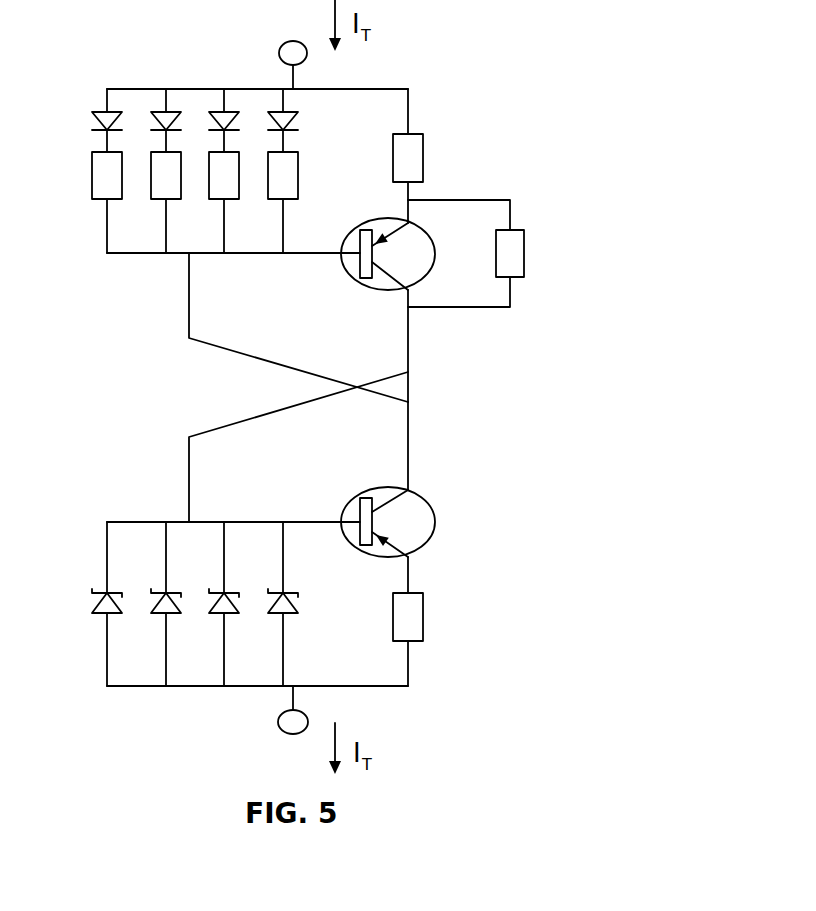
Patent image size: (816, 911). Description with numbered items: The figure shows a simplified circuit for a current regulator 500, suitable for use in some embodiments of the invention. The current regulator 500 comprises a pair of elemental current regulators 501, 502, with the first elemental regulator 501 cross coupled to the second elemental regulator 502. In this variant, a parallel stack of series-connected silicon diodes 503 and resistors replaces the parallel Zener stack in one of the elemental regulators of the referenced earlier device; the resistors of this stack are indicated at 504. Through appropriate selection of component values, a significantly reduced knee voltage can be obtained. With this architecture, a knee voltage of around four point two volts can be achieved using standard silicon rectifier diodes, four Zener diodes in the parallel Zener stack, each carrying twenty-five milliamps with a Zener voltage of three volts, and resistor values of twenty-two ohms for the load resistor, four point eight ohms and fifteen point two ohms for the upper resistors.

The current regulator 500 is at (490, 383).
The first elemental regulator 501 is at (548, 153).
The second elemental regulator 502 is at (548, 484).
The silicon diodes 503 is at (166, 112).
The resistors Ru2 504 is at (277, 204).